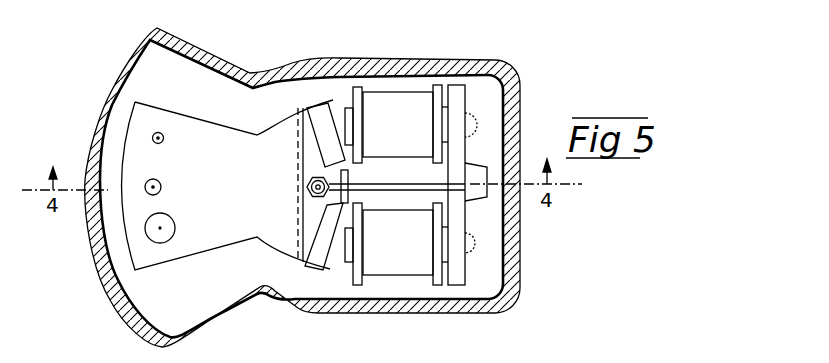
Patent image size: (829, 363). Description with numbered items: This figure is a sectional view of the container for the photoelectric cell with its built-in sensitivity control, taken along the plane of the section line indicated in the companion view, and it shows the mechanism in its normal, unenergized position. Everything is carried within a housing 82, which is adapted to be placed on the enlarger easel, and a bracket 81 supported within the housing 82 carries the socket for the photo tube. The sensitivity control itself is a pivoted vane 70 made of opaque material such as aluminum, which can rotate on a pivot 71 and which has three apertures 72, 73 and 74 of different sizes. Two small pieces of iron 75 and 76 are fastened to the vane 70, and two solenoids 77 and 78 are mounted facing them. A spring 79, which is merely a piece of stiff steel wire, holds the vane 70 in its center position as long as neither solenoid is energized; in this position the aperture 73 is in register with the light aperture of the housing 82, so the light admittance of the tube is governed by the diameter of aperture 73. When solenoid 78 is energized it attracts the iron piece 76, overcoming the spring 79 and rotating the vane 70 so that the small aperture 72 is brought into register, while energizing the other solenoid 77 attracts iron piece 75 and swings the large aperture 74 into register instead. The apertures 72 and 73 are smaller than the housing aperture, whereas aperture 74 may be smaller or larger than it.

The pivoted vane 70 is at (192, 120).
The pivot 71 is at (281, 185).
The aperture 72 is at (173, 146).
The aperture 73 is at (168, 189).
The aperture 74 is at (176, 228).
The iron piece 75 is at (334, 99).
The iron piece 76 is at (321, 268).
The solenoid 77 is at (411, 124).
The solenoid 78 is at (410, 244).
The spring 79 is at (381, 186).
The bracket 81 is at (462, 102).
The housing 82 is at (528, 62).